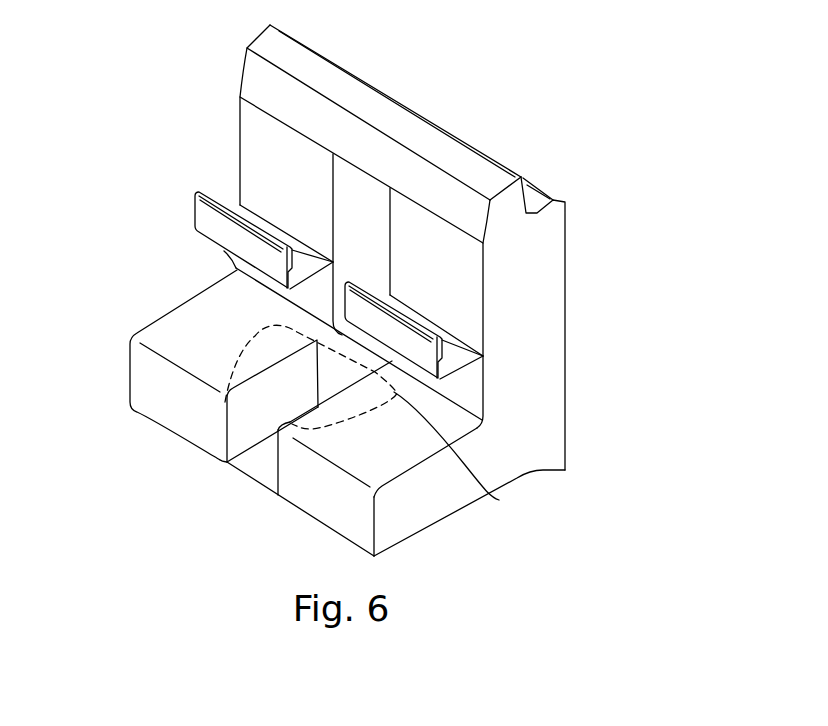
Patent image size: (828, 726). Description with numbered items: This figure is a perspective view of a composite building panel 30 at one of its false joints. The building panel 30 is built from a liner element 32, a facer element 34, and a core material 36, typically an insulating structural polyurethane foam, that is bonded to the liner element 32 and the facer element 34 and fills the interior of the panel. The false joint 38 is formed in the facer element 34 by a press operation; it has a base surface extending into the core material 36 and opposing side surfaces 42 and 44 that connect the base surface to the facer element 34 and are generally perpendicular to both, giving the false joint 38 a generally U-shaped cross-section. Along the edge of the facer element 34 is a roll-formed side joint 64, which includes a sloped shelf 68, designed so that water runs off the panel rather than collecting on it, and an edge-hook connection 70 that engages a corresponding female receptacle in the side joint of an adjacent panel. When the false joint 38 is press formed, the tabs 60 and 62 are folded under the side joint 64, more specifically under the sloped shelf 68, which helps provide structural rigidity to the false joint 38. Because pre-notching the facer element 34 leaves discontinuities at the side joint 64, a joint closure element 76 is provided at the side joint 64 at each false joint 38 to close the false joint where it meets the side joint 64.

The composite building panel 30 is at (526, 133).
The liner element 32 is at (568, 366).
The facer element 34 is at (267, 428).
The core material 36 is at (560, 446).
The false joint 38 is at (252, 453).
The side surface 42 is at (280, 428).
The side surface 44 is at (245, 404).
The tab 60 is at (262, 337).
The tab 62 is at (498, 499).
The side joint 64 is at (220, 188).
The sloped shelf 68 is at (177, 323).
The edge-hook connection 70 is at (365, 233).
The joint closure element 76 is at (388, 98).